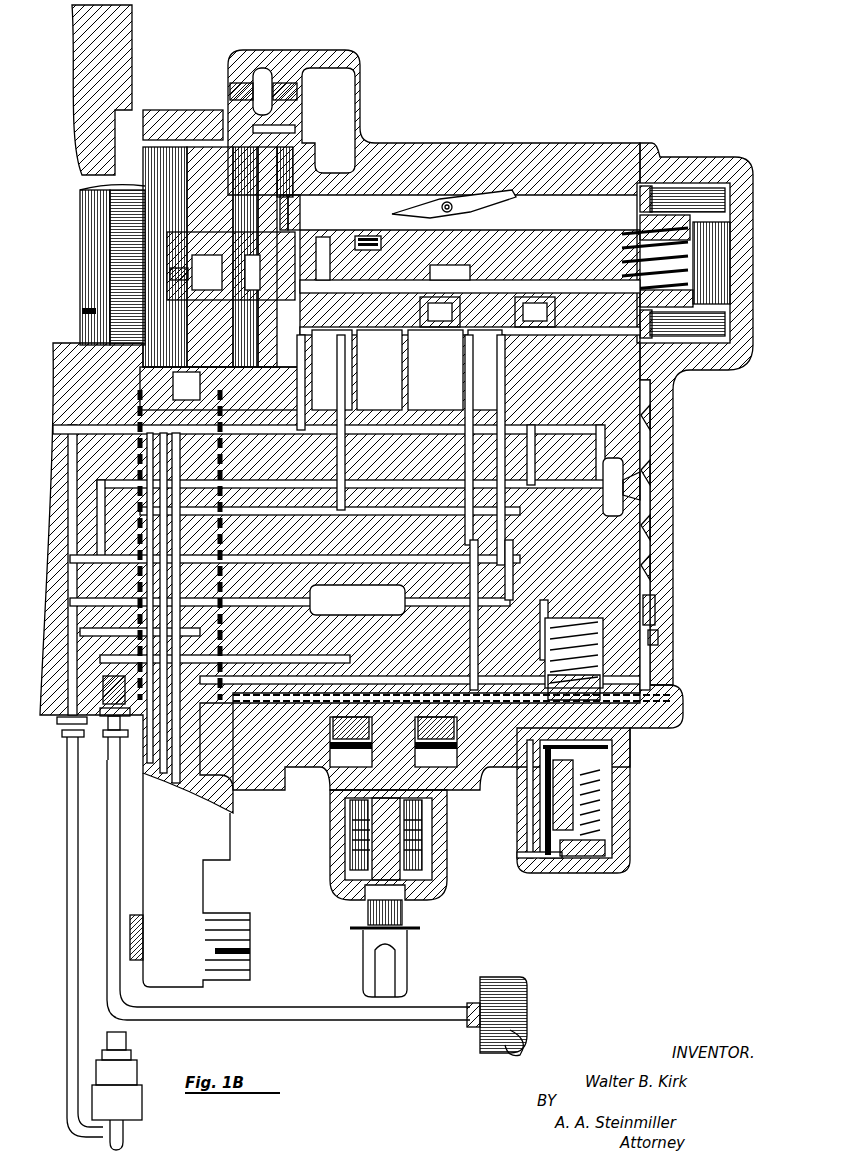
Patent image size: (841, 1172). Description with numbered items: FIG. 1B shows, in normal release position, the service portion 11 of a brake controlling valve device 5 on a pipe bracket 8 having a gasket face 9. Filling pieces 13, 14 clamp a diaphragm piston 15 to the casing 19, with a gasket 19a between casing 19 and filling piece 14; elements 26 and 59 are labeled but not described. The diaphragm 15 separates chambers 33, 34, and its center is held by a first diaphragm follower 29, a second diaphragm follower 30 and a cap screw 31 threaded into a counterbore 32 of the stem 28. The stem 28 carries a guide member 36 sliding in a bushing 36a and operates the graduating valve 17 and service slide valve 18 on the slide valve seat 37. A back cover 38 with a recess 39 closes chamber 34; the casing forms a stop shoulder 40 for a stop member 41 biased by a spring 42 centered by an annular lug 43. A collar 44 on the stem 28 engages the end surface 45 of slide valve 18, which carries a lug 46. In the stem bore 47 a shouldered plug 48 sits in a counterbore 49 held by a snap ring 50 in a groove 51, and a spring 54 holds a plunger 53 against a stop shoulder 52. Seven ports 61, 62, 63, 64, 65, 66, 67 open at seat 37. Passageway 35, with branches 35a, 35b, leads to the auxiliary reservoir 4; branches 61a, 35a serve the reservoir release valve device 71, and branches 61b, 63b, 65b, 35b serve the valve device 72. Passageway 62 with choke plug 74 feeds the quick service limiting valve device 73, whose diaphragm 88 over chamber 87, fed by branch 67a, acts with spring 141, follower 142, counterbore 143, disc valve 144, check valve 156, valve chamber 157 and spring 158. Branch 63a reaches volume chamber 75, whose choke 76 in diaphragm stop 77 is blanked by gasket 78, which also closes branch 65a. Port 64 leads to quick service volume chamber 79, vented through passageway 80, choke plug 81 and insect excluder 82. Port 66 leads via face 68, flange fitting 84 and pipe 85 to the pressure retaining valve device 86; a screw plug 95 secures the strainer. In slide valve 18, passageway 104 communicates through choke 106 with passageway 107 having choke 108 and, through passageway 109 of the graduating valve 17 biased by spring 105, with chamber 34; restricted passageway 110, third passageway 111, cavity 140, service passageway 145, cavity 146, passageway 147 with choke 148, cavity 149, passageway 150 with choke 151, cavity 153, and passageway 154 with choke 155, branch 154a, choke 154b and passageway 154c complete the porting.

The auxiliary reservoir 4 is at (500, 982).
The brake controlling valve device 5 is at (286, 50).
The pipe bracket 8 is at (133, 32).
The gasket face 9 is at (143, 125).
The service valve device 11 is at (462, 130).
The filling piece 13 is at (180, 112).
The filling piece 14 is at (195, 128).
The diaphragm 15 is at (100, 362).
The graduating valve 17 is at (525, 235).
The service slide valve 18 is at (528, 270).
The casing 19 is at (438, 145).
The gasket 19a is at (228, 138).
The bearing 26 is at (140, 158).
The valve operating stem 28 is at (298, 228).
The first diaphragm follower 29 is at (195, 385).
The second diaphragm follower 30 is at (90, 195).
The cap screw 31 is at (170, 282).
The threaded counterbore 32 is at (170, 250).
The chamber 33 is at (150, 210).
The chamber 34 is at (222, 137).
The passageway 35 is at (290, 395).
The first branch passageway 35a is at (350, 668).
The second branch passageway 35b is at (190, 710).
The guide member 36 is at (300, 392).
The bushing 36a is at (290, 130).
The slide valve seat 37 is at (312, 362).
The back cover 38 is at (668, 415).
The recess 39 is at (730, 175).
The stop shoulder 40 is at (645, 170).
The stop member 41 is at (730, 345).
The spring 42 is at (700, 325).
The annular lug 43 is at (710, 205).
The operating collar 44 is at (675, 372).
The end surface 45 is at (580, 290).
The lug 46 is at (610, 370).
The bore 47 is at (725, 232).
The shouldered plug 48 is at (720, 275).
The counterbore 49 is at (720, 215).
The snap ring 50 is at (730, 300).
The groove 51 is at (685, 185).
The stop shoulder 52 is at (625, 240).
The plunger 53 is at (620, 225).
The spring 54 is at (720, 260).
The nut 59 is at (300, 300).
The passageway 61 is at (150, 385).
The first branch passageway 61a is at (410, 555).
The second branch passageway 61b is at (165, 770).
The passageway 62 is at (535, 855).
The passageway 63 is at (135, 470).
The first branch passageway 63a is at (600, 485).
The second branch passageway 63b is at (150, 585).
The passageway 64 is at (468, 397).
The passageway 65 is at (170, 515).
The first branch passageway 65a is at (605, 365).
The second branch passageway 65b is at (170, 535).
The passageway 66 is at (80, 633).
The passageway 67 is at (555, 385).
The first branch passageway 67a is at (118, 522).
The face 68 is at (98, 735).
The reservoir release valve device 71 is at (322, 830).
The valve device 72 is at (237, 833).
The quick service limiting valve device 73 is at (510, 830).
The choke plug 74 is at (470, 690).
The volume chamber 75 is at (625, 510).
The choke 76 is at (625, 500).
The release insuring valve diaphragm stop 77 is at (650, 452).
The gasket 78 is at (650, 550).
The quick service volume chamber 79 is at (369, 610).
The passageway 80 is at (575, 600).
The choke plug 81 is at (655, 598).
The insect excluder 82 is at (655, 630).
The flange fitting 84 is at (60, 718).
The pipe 85 is at (68, 752).
The pressure retaining valve device 86 is at (130, 1072).
The chamber 87 is at (640, 713).
The diaphragm 88 is at (670, 680).
The screw plug 95 is at (88, 318).
The first passageway 104 is at (355, 397).
The spring 105 is at (400, 240).
The choke 106 is at (355, 350).
The second passageway 107 is at (388, 260).
The choke 108 is at (355, 362).
The first passageway 109 is at (392, 228).
The restricted passageway 110 is at (312, 350).
The third passageway 111 is at (522, 262).
The cavity 140 is at (532, 335).
The spring 141 is at (548, 645).
The diaphragm follower 142 is at (548, 680).
The counterbore 143 is at (548, 625).
The disc valve 144 is at (595, 745).
The service passageway 145 is at (535, 290).
The cavity 146 is at (470, 235).
The passageway 147 is at (520, 270).
The choke 148 is at (462, 335).
The cavity 149 is at (470, 345).
The passageway 150 is at (520, 250).
The choke 151 is at (408, 362).
The cavity 153 is at (405, 345).
The passageway 154 is at (380, 318).
The branch passageway 154a is at (375, 300).
The choke 154b is at (335, 275).
The passageway 154c is at (350, 262).
The choke 155 is at (408, 380).
The flat disc check valve 156 is at (595, 835).
The valve chamber 157 is at (600, 805).
The spring 158 is at (590, 790).